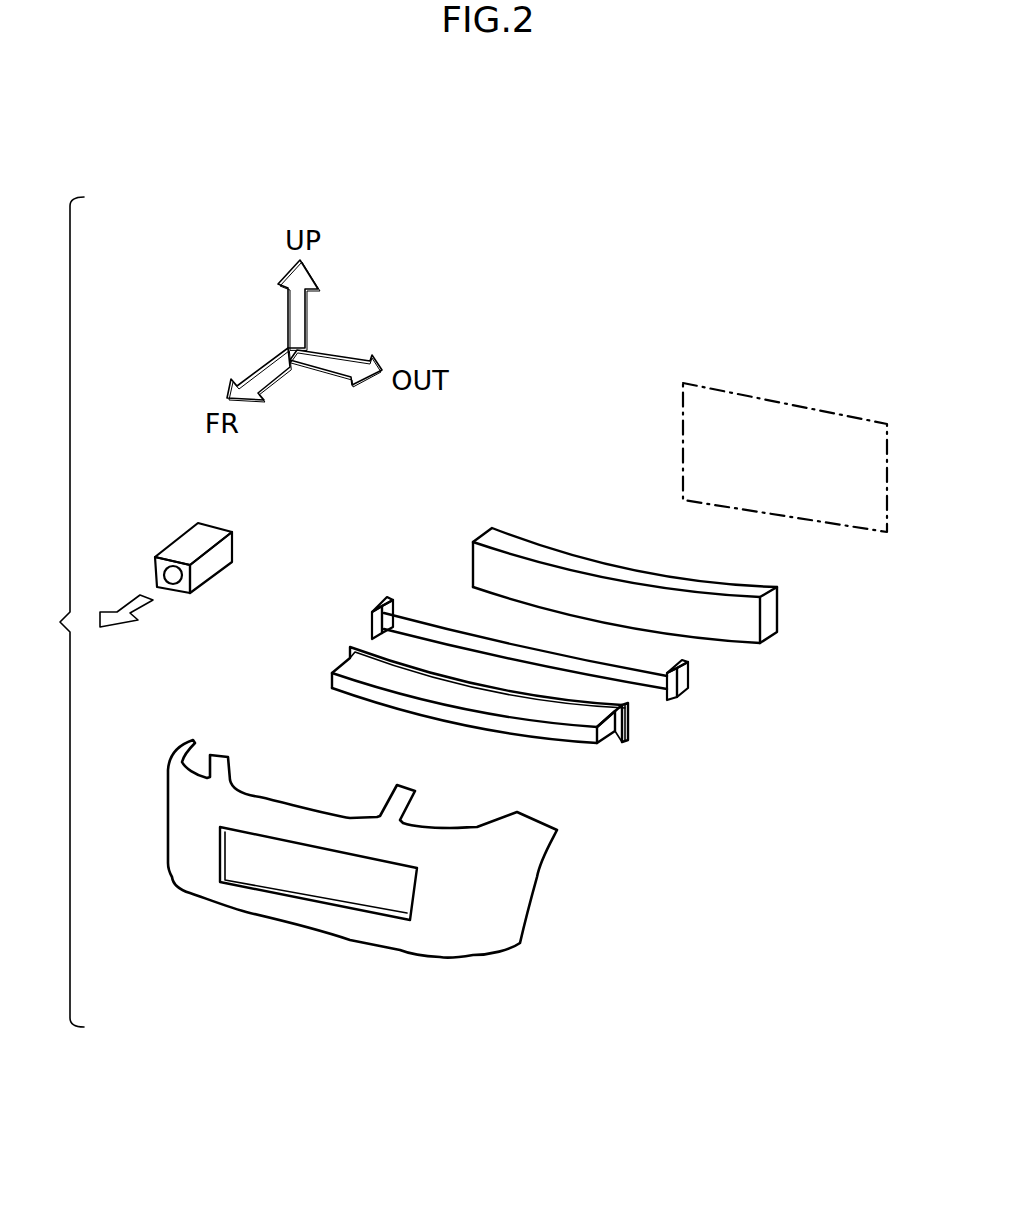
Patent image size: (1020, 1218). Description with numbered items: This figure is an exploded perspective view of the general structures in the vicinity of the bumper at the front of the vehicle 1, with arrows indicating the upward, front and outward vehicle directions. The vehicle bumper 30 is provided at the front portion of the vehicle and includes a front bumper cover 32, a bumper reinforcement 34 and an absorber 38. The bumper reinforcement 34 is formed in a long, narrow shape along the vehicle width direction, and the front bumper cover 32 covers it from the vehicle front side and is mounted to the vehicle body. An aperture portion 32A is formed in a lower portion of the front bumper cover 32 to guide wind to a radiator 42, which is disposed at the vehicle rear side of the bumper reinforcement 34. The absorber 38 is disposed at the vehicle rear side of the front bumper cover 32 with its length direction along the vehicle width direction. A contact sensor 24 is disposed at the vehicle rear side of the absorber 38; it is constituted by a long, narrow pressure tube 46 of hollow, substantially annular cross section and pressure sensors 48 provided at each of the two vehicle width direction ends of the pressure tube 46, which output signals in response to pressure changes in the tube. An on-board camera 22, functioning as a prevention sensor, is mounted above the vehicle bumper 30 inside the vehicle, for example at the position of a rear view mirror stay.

The vehicle 1 is at (787, 543).
The on-board camera 22 is at (217, 523).
The contact sensor 24 is at (812, 686).
The vehicle bumper 30 is at (634, 266).
The front bumper cover 32 is at (527, 905).
The aperture portion 32A is at (407, 900).
The bumper reinforcement 34 is at (770, 617).
The absorber 38 is at (613, 743).
The radiator 42 is at (798, 398).
The pressure tube 46 is at (660, 688).
The pressure sensors 48 is at (382, 606).